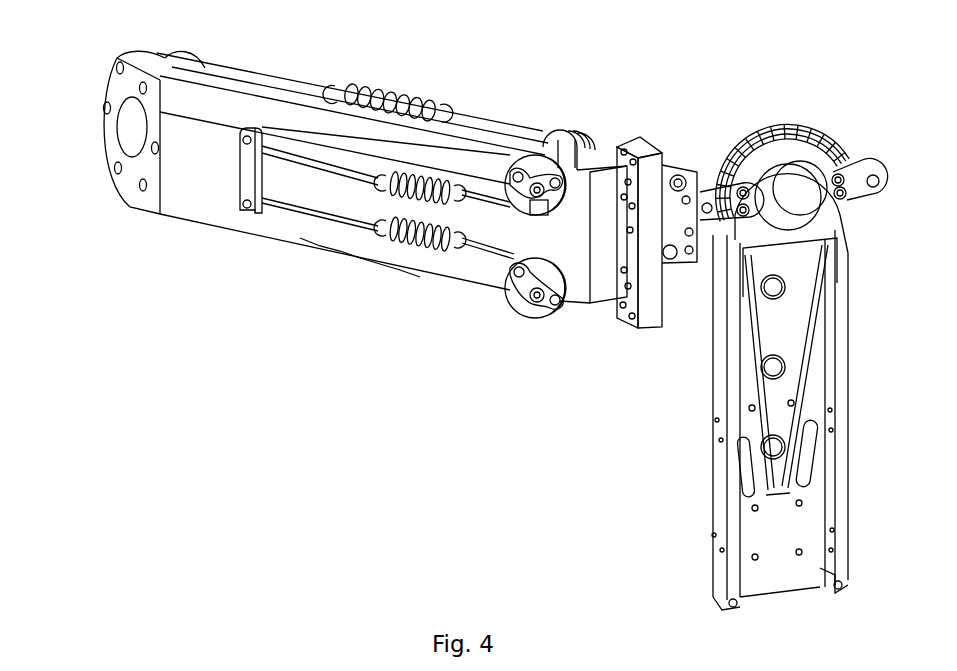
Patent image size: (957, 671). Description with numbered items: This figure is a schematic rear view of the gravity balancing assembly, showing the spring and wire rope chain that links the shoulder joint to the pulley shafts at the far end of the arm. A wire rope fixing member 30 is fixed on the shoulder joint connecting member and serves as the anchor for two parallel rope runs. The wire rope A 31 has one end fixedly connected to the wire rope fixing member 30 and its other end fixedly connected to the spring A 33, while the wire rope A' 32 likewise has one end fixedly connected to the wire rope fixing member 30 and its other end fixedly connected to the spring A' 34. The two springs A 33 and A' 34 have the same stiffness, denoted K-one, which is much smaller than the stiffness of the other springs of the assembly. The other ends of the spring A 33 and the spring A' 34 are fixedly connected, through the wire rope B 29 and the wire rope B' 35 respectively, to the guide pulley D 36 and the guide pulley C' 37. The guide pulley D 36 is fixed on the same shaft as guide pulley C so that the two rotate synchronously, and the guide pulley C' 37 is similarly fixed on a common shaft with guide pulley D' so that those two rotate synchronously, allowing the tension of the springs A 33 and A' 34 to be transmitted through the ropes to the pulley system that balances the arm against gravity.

The wire rope B 29 is at (495, 200).
The wire rope fixing member 30 is at (240, 153).
The wire rope A 31 is at (280, 157).
The wire rope A' 32 is at (293, 207).
The spring A 33 is at (378, 190).
The spring A' 34 is at (378, 238).
The wire rope B' 35 is at (470, 245).
The guide pulley D 36 is at (530, 214).
The guide pulley C' 37 is at (527, 305).